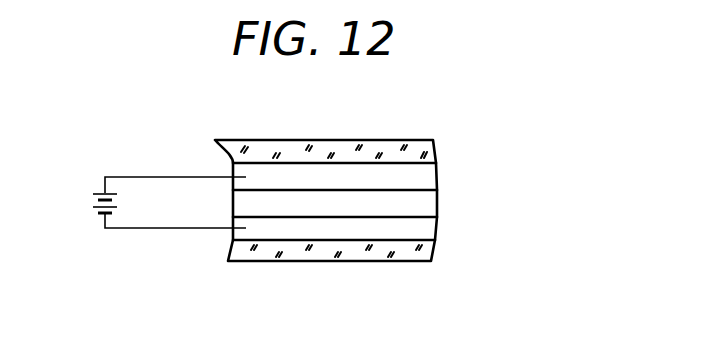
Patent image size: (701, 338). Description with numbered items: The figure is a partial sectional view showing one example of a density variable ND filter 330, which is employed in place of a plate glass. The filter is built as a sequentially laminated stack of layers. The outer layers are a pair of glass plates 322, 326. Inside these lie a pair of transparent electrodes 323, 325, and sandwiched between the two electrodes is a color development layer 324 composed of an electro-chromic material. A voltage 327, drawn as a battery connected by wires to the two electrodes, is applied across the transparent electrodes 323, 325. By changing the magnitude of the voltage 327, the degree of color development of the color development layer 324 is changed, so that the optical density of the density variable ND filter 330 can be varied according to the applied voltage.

The glass plate 322 is at (435, 150).
The transparent electrode 323 is at (437, 173).
The color development layer 324 is at (437, 197).
The transparent electrode 325 is at (437, 227).
The glass plate 326 is at (436, 248).
The voltage 327 is at (92, 202).
The density variable ND filter 330 is at (547, 83).